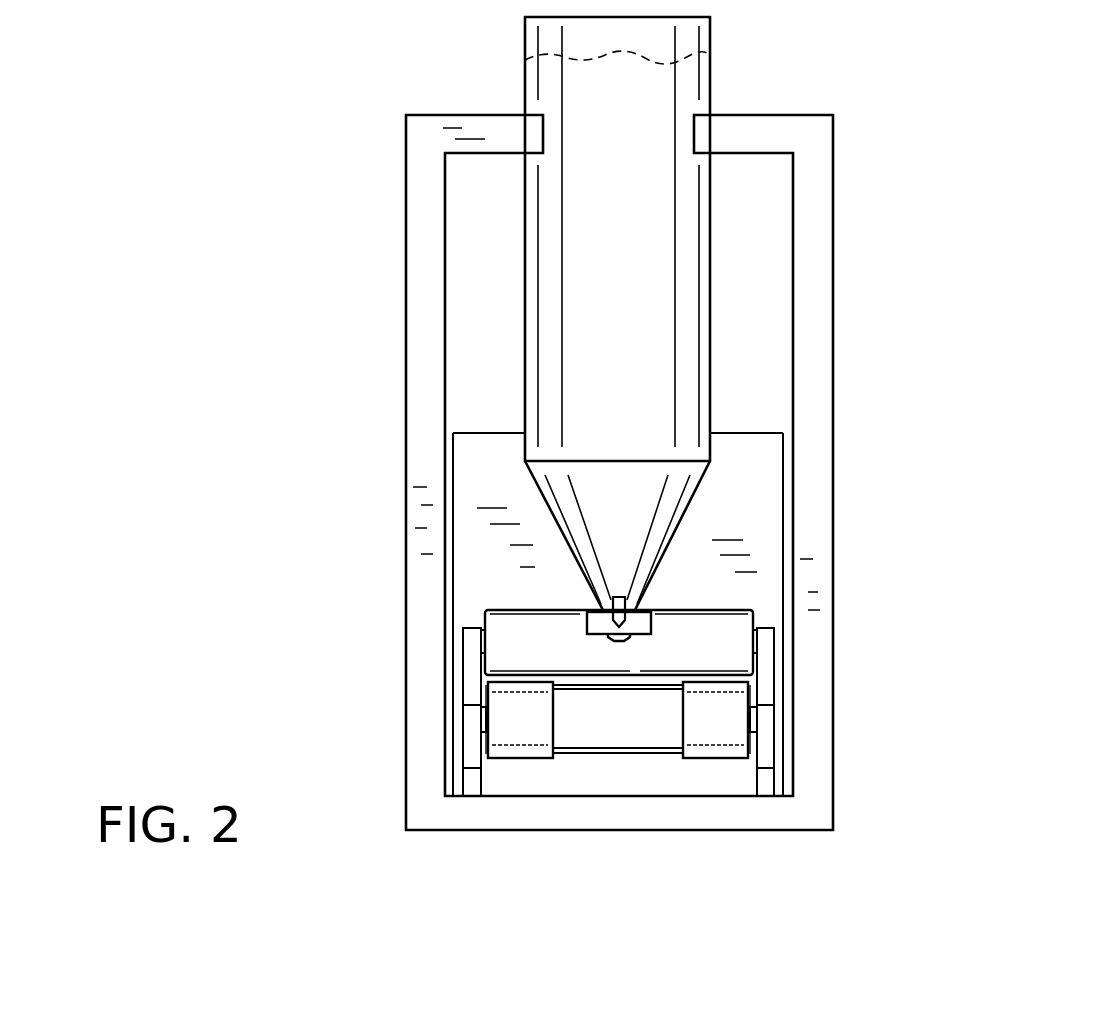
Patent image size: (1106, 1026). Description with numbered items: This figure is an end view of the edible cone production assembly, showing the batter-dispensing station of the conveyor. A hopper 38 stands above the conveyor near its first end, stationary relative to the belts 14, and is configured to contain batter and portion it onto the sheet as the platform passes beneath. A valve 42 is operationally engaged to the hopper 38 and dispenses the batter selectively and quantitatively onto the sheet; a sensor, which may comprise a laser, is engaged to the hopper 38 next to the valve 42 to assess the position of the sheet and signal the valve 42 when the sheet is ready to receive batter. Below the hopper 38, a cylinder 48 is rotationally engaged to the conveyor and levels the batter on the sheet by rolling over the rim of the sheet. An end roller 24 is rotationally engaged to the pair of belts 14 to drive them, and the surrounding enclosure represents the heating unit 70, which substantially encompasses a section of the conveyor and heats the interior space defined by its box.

The belts 14 is at (522, 720).
The end roller 24 is at (630, 732).
The hopper 38 is at (628, 288).
The valve 42 is at (655, 622).
The cylinder 48 is at (720, 645).
The heating unit 70 is at (747, 485).